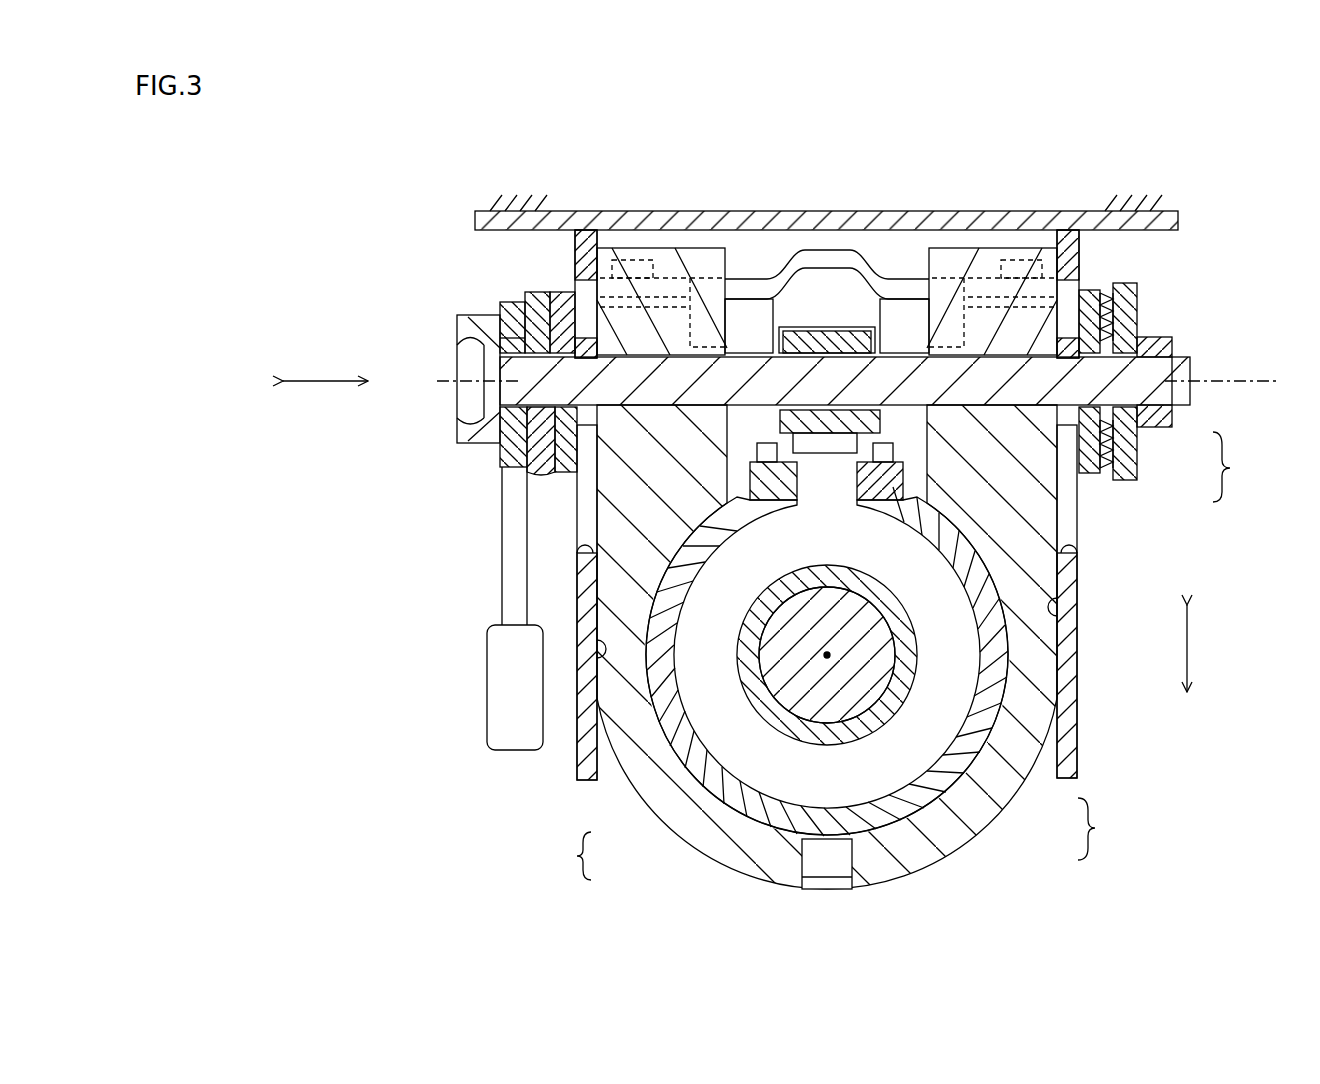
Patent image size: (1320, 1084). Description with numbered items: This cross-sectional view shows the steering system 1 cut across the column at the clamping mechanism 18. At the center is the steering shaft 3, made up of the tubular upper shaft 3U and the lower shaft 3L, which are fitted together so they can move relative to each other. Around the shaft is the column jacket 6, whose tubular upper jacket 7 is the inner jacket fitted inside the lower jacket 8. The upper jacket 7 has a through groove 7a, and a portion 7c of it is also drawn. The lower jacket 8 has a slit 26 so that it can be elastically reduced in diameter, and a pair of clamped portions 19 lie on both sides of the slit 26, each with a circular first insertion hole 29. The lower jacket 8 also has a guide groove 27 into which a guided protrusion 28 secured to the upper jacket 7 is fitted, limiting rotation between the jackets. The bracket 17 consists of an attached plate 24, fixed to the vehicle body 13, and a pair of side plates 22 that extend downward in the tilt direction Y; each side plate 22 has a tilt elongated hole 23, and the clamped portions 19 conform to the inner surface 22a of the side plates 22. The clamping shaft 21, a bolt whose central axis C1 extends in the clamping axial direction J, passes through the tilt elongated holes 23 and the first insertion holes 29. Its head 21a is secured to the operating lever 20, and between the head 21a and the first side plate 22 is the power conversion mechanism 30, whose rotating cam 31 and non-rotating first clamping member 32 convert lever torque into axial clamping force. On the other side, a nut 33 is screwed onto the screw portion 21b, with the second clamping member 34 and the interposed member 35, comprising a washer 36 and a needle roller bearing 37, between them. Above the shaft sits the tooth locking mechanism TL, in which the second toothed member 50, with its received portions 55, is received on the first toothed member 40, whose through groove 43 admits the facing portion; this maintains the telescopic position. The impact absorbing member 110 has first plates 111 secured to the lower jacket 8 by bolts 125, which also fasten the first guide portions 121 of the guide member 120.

The steering system 1 is at (1203, 190).
The steering shaft 3 is at (736, 722).
The upper shaft 3U is at (762, 718).
The lower shaft 3L is at (817, 708).
The column jacket 6 is at (1097, 829).
The upper jacket 7 is at (982, 758).
The through groove 7a is at (806, 498).
The ring bent portion 7c is at (764, 505).
The lower jacket 8 is at (962, 838).
The vehicle body 13 is at (497, 210).
The bracket 17 is at (1079, 230).
The clamping mechanism 18 is at (440, 428).
The clamped portions 19 is at (677, 258).
The operating lever 20 is at (505, 722).
The clamping shaft 21 is at (515, 395).
The head 21a is at (468, 330).
The screw portion 21b is at (1182, 352).
The side plates 22 is at (577, 770).
The inner surface 22a is at (590, 662).
The tilt elongated hole 23 is at (580, 549).
The attached plate 24 is at (808, 212).
The slit 26 is at (843, 300).
The guide groove 27 is at (812, 870).
The guided protrusion 28 is at (838, 862).
The first insertion hole 29 is at (604, 352).
The power conversion mechanism 30 is at (521, 296).
The rotating cam 31 is at (540, 444).
The first clamping member 32 is at (563, 430).
The nut 33 is at (1140, 342).
The second clamping member 34 is at (1088, 457).
The interposed member 35 is at (1238, 467).
The washer 36 is at (1128, 438).
The needle roller bearing 37 is at (1106, 452).
The first toothed member 40 is at (906, 480).
The through groove 43 is at (850, 475).
The second toothed member 50 is at (778, 318).
The received portion 55 is at (831, 480).
The impact absorbing member 110 is at (907, 296).
The first plates 111 is at (646, 266).
The guide member 120 is at (766, 275).
The first guide portions 121 is at (700, 276).
The bolts 125 is at (632, 262).
The central axis C1 is at (446, 375).
The clamping axial direction J is at (323, 376).
The tooth locking mechanism TL is at (848, 292).
The tilt direction Y is at (1190, 650).